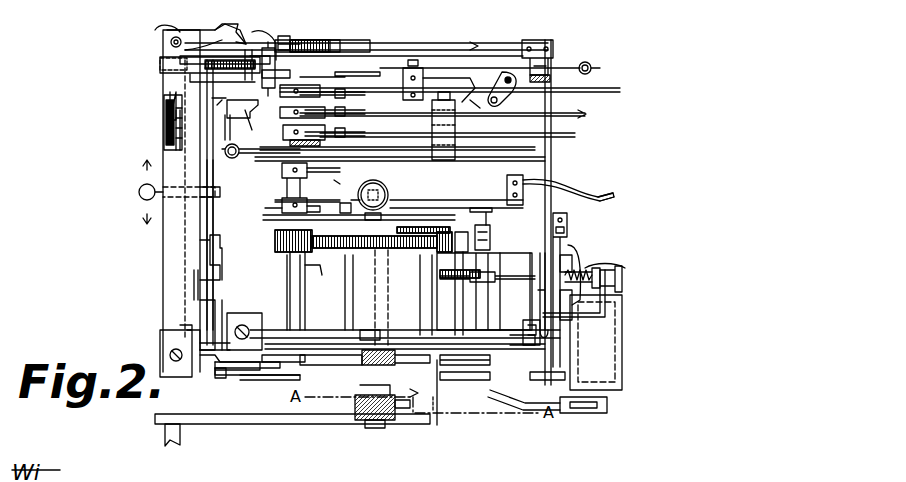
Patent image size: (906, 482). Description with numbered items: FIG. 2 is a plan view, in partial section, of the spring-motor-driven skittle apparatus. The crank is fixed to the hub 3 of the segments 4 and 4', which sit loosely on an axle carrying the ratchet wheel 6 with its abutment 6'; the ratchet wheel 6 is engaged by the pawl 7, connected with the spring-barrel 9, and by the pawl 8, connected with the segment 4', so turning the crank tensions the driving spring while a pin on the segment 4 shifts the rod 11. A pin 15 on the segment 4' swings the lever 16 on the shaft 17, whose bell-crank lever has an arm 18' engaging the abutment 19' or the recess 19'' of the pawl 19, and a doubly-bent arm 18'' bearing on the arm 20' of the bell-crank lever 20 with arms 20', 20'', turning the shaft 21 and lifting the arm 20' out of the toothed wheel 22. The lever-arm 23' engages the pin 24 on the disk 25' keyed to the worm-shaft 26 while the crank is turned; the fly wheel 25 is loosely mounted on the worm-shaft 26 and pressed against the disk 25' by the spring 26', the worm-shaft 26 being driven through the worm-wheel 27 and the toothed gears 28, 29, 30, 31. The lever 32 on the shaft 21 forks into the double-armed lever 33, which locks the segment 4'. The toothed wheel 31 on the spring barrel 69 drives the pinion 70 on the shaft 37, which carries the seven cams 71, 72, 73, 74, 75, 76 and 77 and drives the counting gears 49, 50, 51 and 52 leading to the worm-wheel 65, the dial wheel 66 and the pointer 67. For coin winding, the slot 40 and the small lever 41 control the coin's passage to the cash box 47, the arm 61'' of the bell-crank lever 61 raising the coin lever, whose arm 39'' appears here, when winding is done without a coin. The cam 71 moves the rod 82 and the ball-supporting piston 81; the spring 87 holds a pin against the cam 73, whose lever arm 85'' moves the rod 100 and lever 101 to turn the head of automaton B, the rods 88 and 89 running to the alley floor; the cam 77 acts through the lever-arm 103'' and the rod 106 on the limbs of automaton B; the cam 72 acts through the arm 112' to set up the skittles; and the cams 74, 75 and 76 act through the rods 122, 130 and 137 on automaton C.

The hub 3 is at (385, 405).
The segment 4 is at (408, 412).
The segment 4' is at (434, 407).
The ratchet wheel 6 is at (283, 324).
The abutment 6' is at (365, 313).
The pawl 7 is at (402, 312).
The pawl 8 is at (348, 322).
The spring-barrel 9 is at (488, 332).
The rod 11 is at (258, 378).
The pin 15 is at (450, 365).
The lever 16 is at (229, 310).
The shaft 17 is at (210, 212).
The arm of bell-crank lever 18' is at (215, 25).
The doubly-bent lever arm 18'' is at (269, 32).
The pawl 19 is at (163, 201).
The abutment 19' is at (186, 25).
The recess 19'' is at (153, 95).
The bell-crank lever 20 is at (315, 32).
The lever arm 20' is at (273, 95).
The block 20'' is at (297, 29).
The shaft 21 is at (460, 48).
The toothed wheel 22 is at (259, 73).
The lever arm 23' is at (570, 283).
The pin 24 is at (555, 300).
The fly wheel 25 is at (598, 281).
The disk 25' is at (572, 285).
The worm-shaft 26 is at (615, 278).
The spring 26' is at (585, 270).
The worm-wheel 27 is at (489, 272).
The toothed gear 28 is at (478, 225).
The toothed gear 29 is at (434, 228).
The toothed gear 30 is at (460, 293).
The toothed wheel 31 is at (390, 297).
The lever 32 is at (552, 149).
The double-armed lever 33 is at (507, 356).
The shaft 37 is at (287, 270).
The stop 39'' is at (228, 387).
The slot 40 is at (364, 366).
The small lever 41 is at (335, 368).
The cash box 47 is at (596, 342).
The toothed gear wheel 49 is at (332, 46).
The toothed gear wheel 50 is at (245, 80).
The toothed gear wheel 51 is at (222, 109).
The toothed wheel 52 is at (205, 66).
The bell-crank lever 61 is at (166, 257).
The arm of bell-crank lever 61'' is at (154, 286).
The worm-wheel 65 is at (195, 124).
The front wheel 66 is at (176, 150).
The shorter hand 67 is at (166, 122).
The spring barrel 69 is at (317, 291).
The pinion 70 is at (275, 240).
The cam 71 is at (280, 201).
The cam 72 is at (317, 199).
The cam 73 is at (330, 160).
The cam 74 is at (360, 140).
The cam 75 is at (358, 118).
The cam 76 is at (326, 99).
The cam 77 is at (340, 75).
The piston 81 is at (380, 182).
The rod 82 is at (560, 205).
The lever-arm 85'' is at (430, 126).
The spring 87 is at (233, 158).
The rod 88 is at (255, 140).
The rod 89 is at (508, 176).
The rod 100 is at (470, 88).
The lever 101 is at (500, 82).
The lever-arm 103'' is at (536, 48).
The rod 106 is at (558, 62).
The arm 112' is at (623, 186).
The rod 122 is at (447, 127).
The rod 130 is at (588, 115).
The rod 137 is at (398, 86).